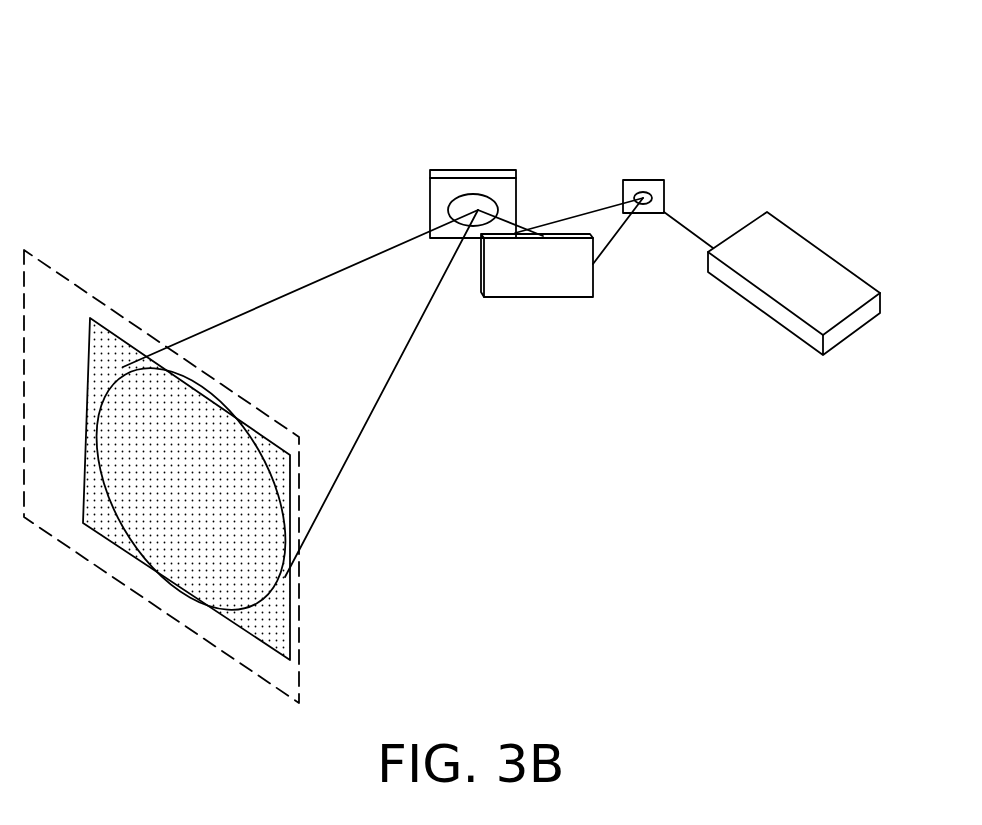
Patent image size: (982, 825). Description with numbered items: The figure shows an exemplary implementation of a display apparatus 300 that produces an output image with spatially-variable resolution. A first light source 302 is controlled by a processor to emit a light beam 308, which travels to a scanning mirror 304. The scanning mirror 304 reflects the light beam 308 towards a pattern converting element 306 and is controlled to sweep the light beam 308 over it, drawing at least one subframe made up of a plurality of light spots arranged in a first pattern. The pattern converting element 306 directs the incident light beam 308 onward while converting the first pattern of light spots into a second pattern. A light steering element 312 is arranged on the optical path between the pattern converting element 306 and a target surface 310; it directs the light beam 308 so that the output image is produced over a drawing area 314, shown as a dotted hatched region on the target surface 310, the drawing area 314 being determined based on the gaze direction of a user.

The display apparatus 300 is at (814, 80).
The first light source 302 is at (800, 255).
The scanning mirror 304 is at (643, 180).
The pattern converting element 306 is at (555, 285).
The light beam 308 is at (308, 302).
The target surface 310 is at (38, 258).
The light steering element 312 is at (443, 186).
The drawing area 314 is at (112, 543).